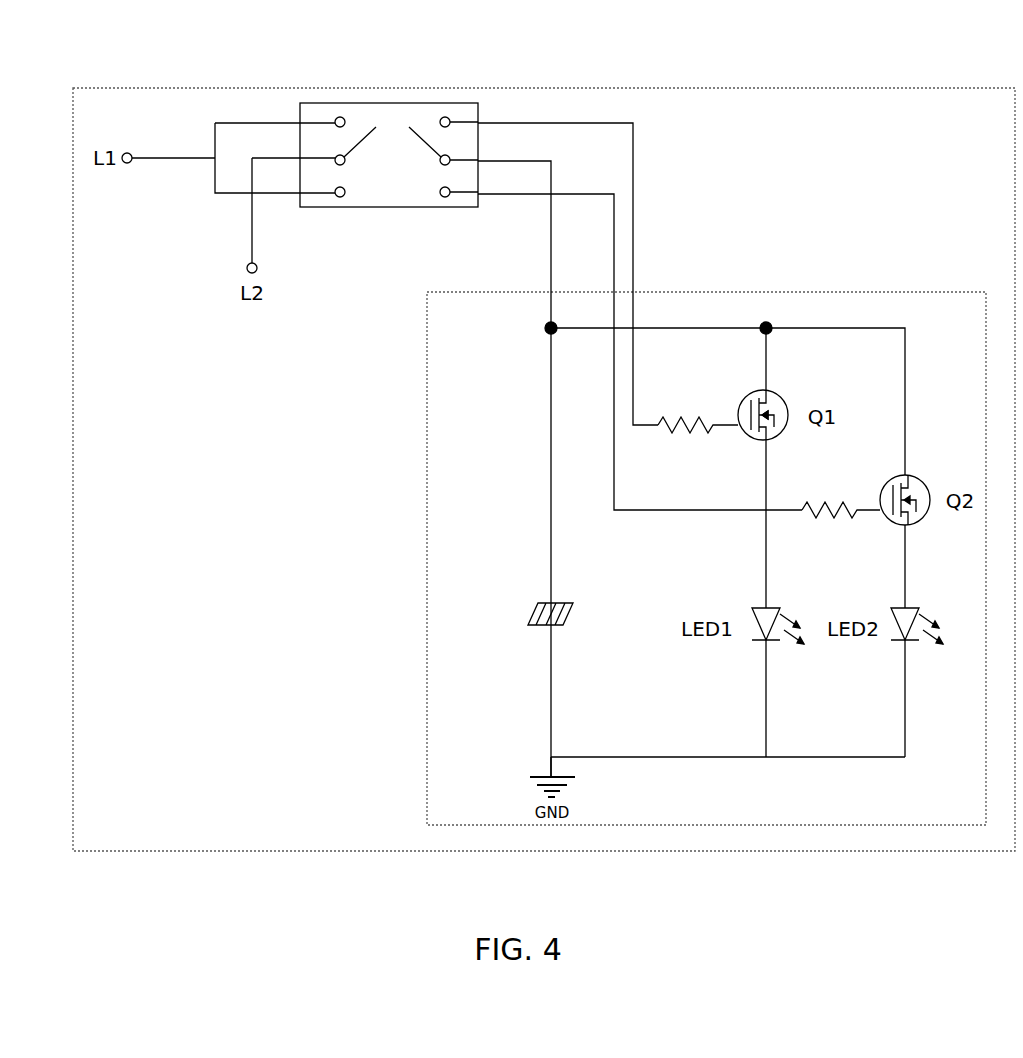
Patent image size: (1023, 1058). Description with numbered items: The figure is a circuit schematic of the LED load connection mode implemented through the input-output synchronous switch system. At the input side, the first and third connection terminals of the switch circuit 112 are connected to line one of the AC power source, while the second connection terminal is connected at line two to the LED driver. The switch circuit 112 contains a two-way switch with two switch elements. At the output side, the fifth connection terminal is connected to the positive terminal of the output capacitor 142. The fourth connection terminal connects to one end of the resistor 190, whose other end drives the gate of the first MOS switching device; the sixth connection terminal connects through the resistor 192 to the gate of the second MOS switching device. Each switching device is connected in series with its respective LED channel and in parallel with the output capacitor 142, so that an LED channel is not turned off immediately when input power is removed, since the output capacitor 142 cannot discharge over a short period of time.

The switch circuit 112 is at (391, 102).
The resistor 190 is at (698, 409).
The resistor 192 is at (841, 489).
The output capacitor 142 is at (516, 598).